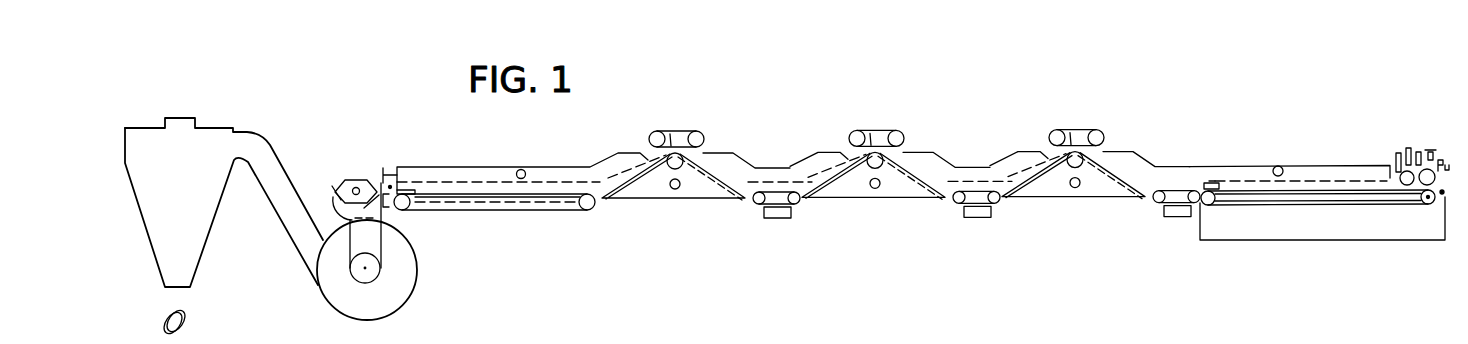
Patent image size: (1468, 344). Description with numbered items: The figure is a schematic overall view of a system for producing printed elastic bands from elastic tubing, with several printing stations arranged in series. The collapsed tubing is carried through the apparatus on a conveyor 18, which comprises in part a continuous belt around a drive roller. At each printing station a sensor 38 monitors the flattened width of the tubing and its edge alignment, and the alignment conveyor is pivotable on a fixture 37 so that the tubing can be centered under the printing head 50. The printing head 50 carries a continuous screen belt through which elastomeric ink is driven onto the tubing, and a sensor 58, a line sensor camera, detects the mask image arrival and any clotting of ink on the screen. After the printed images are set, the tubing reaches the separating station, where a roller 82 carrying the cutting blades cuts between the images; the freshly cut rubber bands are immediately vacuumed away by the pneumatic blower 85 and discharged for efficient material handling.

The conveyor 18 is at (1385, 205).
The fixture 37 is at (764, 222).
The sensor 38 is at (748, 178).
The printing head 50 is at (703, 135).
The sensor 58 is at (671, 136).
The roller 82 is at (363, 180).
The pneumatic blower 85 is at (402, 262).